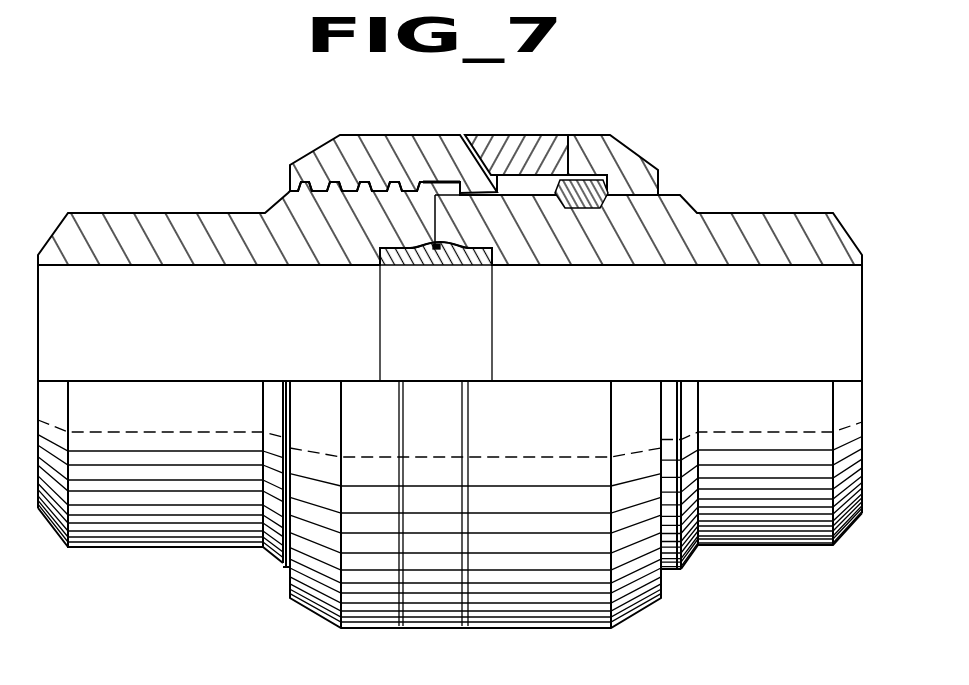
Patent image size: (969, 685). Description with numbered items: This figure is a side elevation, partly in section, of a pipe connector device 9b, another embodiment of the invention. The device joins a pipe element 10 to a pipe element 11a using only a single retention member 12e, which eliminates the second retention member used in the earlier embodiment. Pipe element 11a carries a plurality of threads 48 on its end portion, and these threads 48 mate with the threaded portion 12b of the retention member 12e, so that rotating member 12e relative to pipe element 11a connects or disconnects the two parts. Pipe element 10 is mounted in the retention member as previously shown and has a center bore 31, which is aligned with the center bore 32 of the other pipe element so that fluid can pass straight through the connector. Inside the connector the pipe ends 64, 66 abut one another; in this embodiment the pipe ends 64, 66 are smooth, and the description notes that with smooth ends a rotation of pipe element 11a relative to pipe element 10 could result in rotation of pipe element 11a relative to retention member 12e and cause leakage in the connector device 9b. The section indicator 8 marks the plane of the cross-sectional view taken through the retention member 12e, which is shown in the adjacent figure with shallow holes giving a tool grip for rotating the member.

The section line 8- 8 is at (567, 176).
The pipe connector device 9b is at (542, 146).
The pipe element 10 is at (803, 215).
The pipe element 11a is at (90, 217).
The threaded portion 12b is at (417, 187).
The retention member 12e is at (658, 170).
The center bore 31 is at (768, 329).
The center bore 32 is at (160, 329).
The threads 48 is at (326, 182).
The pipe end 64 is at (427, 214).
The pipe end 66 is at (435, 233).